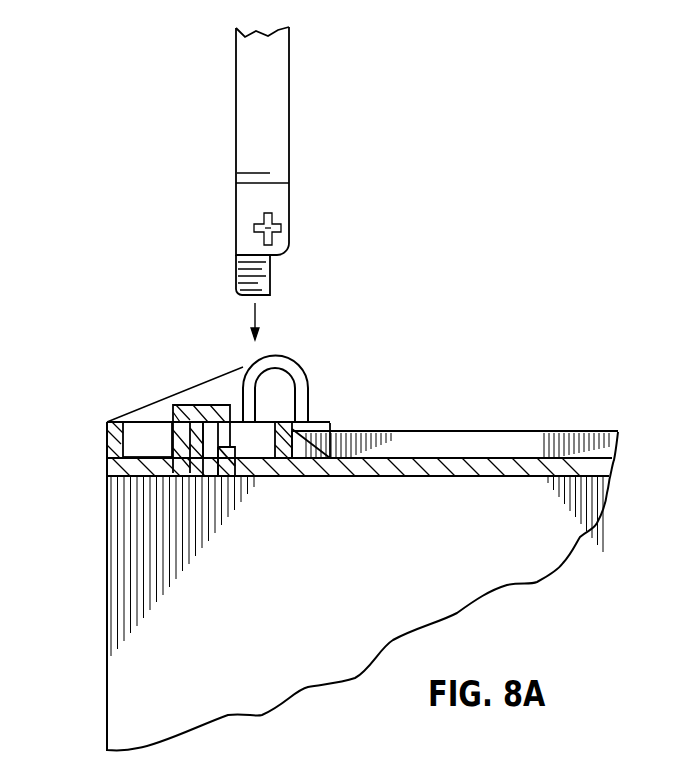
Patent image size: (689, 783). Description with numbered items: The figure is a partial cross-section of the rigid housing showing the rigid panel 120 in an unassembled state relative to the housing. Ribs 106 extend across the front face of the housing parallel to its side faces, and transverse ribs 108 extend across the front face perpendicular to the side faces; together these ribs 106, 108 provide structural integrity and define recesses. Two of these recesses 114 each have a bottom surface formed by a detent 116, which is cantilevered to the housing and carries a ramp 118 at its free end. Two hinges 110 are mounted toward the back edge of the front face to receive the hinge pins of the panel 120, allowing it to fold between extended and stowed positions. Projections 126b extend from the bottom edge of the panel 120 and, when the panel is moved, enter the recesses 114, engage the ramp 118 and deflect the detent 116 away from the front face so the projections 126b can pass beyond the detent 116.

The ribs 106 is at (107, 422).
The transverse ribs 108 is at (138, 438).
The hinges 110 is at (297, 367).
The recesses 114 is at (178, 418).
The detent 116 is at (273, 462).
The ramp 118 is at (220, 443).
The rigid panel 120 is at (289, 132).
The projections 126b is at (236, 266).